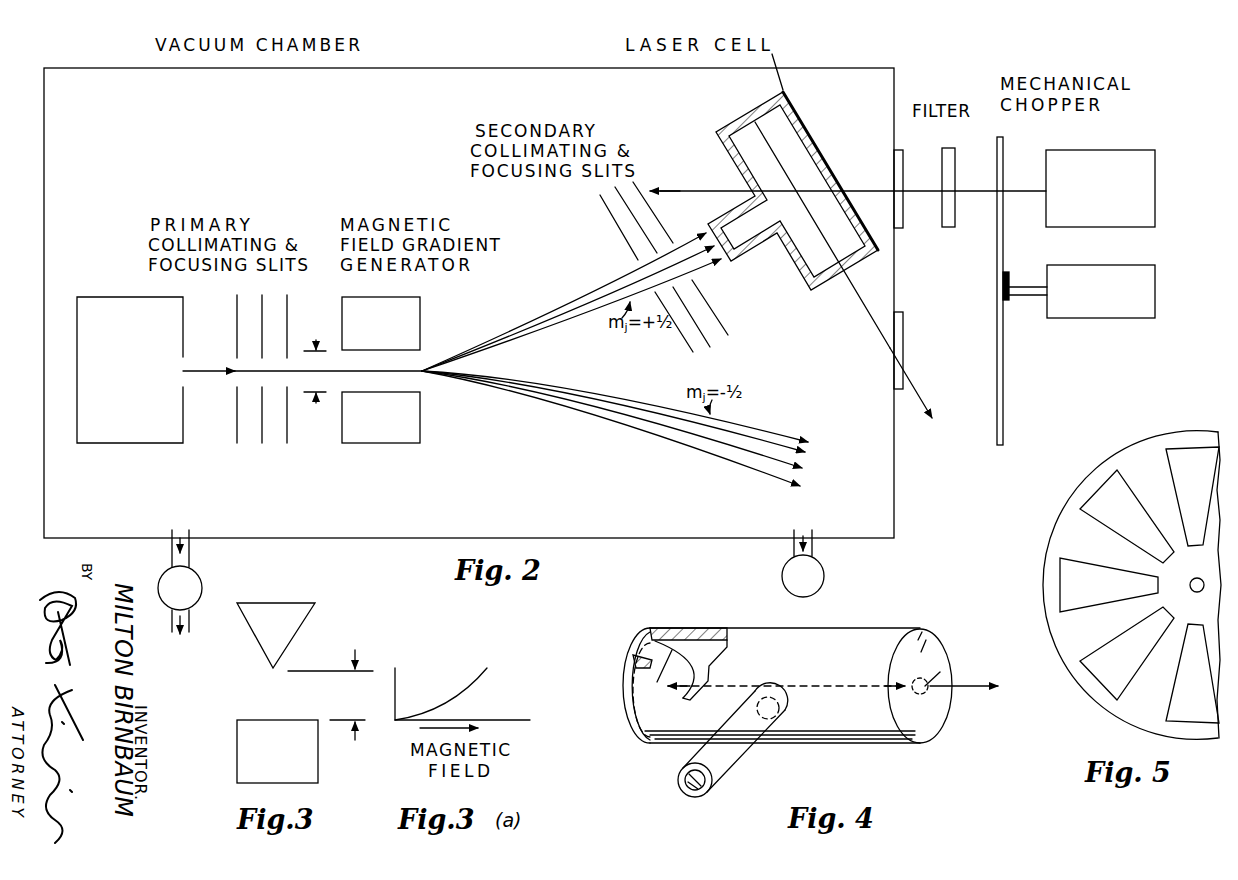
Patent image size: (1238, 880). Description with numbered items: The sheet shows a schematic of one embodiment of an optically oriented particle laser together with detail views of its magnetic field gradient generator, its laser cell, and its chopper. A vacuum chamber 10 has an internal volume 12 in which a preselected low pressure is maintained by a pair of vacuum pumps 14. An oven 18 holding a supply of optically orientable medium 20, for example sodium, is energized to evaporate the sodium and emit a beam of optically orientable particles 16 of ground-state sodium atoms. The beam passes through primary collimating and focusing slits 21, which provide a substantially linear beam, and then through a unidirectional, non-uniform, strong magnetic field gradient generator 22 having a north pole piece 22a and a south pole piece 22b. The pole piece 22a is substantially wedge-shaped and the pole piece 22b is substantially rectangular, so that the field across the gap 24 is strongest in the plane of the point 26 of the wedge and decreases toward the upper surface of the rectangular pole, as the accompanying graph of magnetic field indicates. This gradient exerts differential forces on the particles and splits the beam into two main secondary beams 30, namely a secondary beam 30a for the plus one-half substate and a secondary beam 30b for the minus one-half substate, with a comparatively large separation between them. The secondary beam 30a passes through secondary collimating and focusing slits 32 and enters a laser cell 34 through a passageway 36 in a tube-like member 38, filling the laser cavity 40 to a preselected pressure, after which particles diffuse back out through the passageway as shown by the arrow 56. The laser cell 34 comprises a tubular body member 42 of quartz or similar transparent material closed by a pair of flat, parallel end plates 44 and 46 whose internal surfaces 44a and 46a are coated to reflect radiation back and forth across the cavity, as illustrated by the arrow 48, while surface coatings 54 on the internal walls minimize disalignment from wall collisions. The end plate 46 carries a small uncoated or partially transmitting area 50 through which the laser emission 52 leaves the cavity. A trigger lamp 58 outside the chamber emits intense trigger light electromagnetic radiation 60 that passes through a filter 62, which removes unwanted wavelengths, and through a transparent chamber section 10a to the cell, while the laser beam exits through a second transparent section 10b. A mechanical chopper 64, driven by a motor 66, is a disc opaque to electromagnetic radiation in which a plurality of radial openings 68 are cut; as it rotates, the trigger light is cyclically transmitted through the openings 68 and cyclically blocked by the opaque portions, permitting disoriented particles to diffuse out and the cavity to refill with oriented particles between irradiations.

In FIG. 2, the vacuum chamber 10 is at (415, 70).
In FIG. 2, the transparent wall section 10a is at (903, 226).
In FIG. 2, the transparent wall section 10b is at (903, 312).
In FIG. 2, the internal volume 12 is at (512, 503).
In FIG. 2, the vacuum pumps 14 is at (189, 567).
In FIG. 2, the beam of optically orientable particles 16 is at (205, 367).
In FIG. 2, the oven 18 is at (115, 443).
In FIG. 2, the optically orientable medium 20 is at (140, 367).
In FIG. 2, the primary collimating and focusing slits 21 is at (237, 295).
In FIG. 2, the magnetic field gradient generator 22 is at (376, 371).
In FIG. 3, the magnetic field gradient generator 22 is at (298, 680).
In FIG. 2, the north pole piece 22a is at (370, 298).
In FIG. 3, the north pole piece 22a is at (305, 626).
In FIG. 2, the south pole piece 22b is at (370, 443).
In FIG. 3, the south pole piece 22b is at (318, 778).
In FIG. 2, the gap 24 is at (312, 350).
In FIG. 3, the gap 24 is at (330, 695).
In FIG. 3, the point of wedge-shaped pole piece 26 is at (270, 668).
In FIG. 2, the main secondary beams 30 is at (615, 359).
In FIG. 2, the secondary beam mj=+1/2 30a is at (551, 322).
In FIG. 2, the secondary beam mj=-1/2 30b is at (594, 394).
In FIG. 2, the secondary collimating and focusing slits 32 is at (628, 186).
In FIG. 2, the laser cell 34 is at (807, 245).
In FIG. 4, the laser cell 34 is at (801, 704).
In FIG. 2, the passageway 36 is at (712, 224).
In FIG. 4, the passageway 36 is at (682, 795).
In FIG. 2, the tube-like member 38 is at (765, 246).
In FIG. 4, the tube-like member 38 is at (733, 754).
In FIG. 2, the laser cavity 40 is at (795, 210).
In FIG. 4, the laser cavity 40 is at (757, 671).
In FIG. 2, the tubular body member 42 is at (742, 120).
In FIG. 4, the tubular body member 42 is at (762, 629).
In FIG. 2, the end plate 44 is at (780, 95).
In FIG. 4, the end plate 44 is at (630, 645).
In FIG. 2, the internal reflective surface 44a is at (772, 118).
In FIG. 4, the internal reflective surface 44a is at (672, 642).
In FIG. 2, the end plate 46 is at (852, 258).
In FIG. 4, the end plate 46 is at (932, 648).
In FIG. 2, the internal reflective surface 46a is at (815, 283).
In FIG. 4, the internal reflective surface 46a is at (882, 706).
In FIG. 2, the arrow illustrating reflected radiation 48 is at (795, 160).
In FIG. 4, the arrow illustrating reflected radiation 48 is at (652, 643).
In FIG. 2, the transparent area 50 is at (843, 282).
In FIG. 4, the transparent area 50 is at (948, 670).
In FIG. 2, the laser emission 52 is at (878, 332).
In FIG. 4, the laser emission 52 is at (975, 693).
In FIG. 2, the surface coatings 54 is at (868, 252).
In FIG. 4, the surface coatings 54 is at (640, 722).
In FIG. 2, the arrow illustrating particle diffusion 56 is at (716, 266).
In FIG. 2, the trigger lamp 58 is at (1108, 150).
In FIG. 2, the trigger light electromagnetic radiation 60 is at (1014, 195).
In FIG. 2, the filter 62 is at (962, 144).
In FIG. 2, the mechanical chopper 64 is at (1003, 138).
In FIG. 5, the mechanical chopper 64 is at (1118, 585).
In FIG. 2, the motor 66 is at (1118, 265).
In FIG. 5, the radial openings 68 is at (1200, 440).